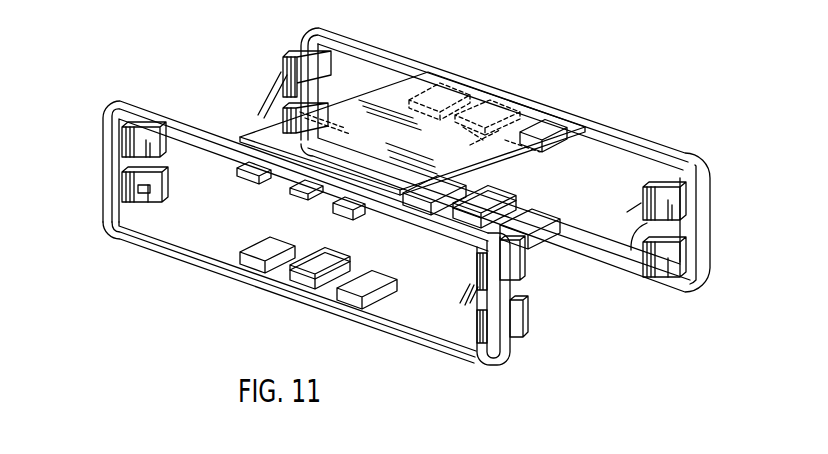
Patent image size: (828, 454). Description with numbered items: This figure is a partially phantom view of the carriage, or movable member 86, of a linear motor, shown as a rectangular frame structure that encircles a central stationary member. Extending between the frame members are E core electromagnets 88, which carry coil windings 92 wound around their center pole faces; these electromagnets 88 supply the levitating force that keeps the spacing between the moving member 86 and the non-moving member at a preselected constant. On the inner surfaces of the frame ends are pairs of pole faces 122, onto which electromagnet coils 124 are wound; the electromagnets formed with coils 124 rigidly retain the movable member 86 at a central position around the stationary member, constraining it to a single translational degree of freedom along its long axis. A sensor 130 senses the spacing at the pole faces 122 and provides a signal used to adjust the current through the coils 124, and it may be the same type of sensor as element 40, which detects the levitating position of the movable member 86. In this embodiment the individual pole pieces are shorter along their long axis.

The movable member 86 is at (168, 66).
The sensor 40 is at (305, 200).
The E core electromagnets 88 is at (255, 263).
The coil windings 92 is at (521, 100).
The electromagnet coils 124 is at (300, 58).
The sensor 130 is at (280, 120).
The pole faces 122 is at (517, 330).